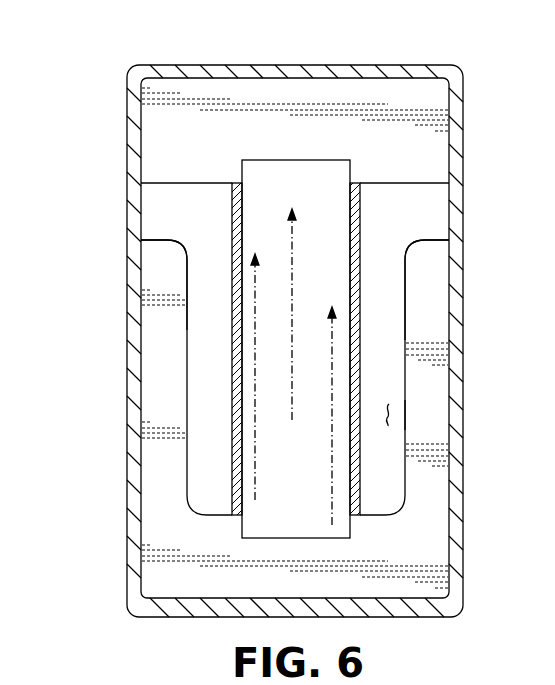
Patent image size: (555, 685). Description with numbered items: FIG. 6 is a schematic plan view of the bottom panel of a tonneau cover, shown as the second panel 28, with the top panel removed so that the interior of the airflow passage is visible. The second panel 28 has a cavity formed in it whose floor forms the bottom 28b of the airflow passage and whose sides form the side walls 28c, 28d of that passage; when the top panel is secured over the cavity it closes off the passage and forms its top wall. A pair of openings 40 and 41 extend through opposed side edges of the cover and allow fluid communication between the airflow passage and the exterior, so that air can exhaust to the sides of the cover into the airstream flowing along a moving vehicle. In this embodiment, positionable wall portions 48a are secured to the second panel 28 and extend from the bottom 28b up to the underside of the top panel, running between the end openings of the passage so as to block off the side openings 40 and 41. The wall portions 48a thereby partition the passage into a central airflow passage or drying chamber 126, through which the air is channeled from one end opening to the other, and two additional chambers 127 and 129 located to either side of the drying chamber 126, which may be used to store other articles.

The second panel 28 is at (127, 100).
The bottom 28b is at (393, 418).
The side wall 28c is at (187, 322).
The side wall 28d is at (405, 338).
The opening 40 is at (133, 207).
The opening 41 is at (455, 216).
The wall portion 48a is at (232, 217).
The drying chamber 126 is at (310, 230).
The chamber 127 is at (202, 381).
The chamber 129 is at (377, 370).